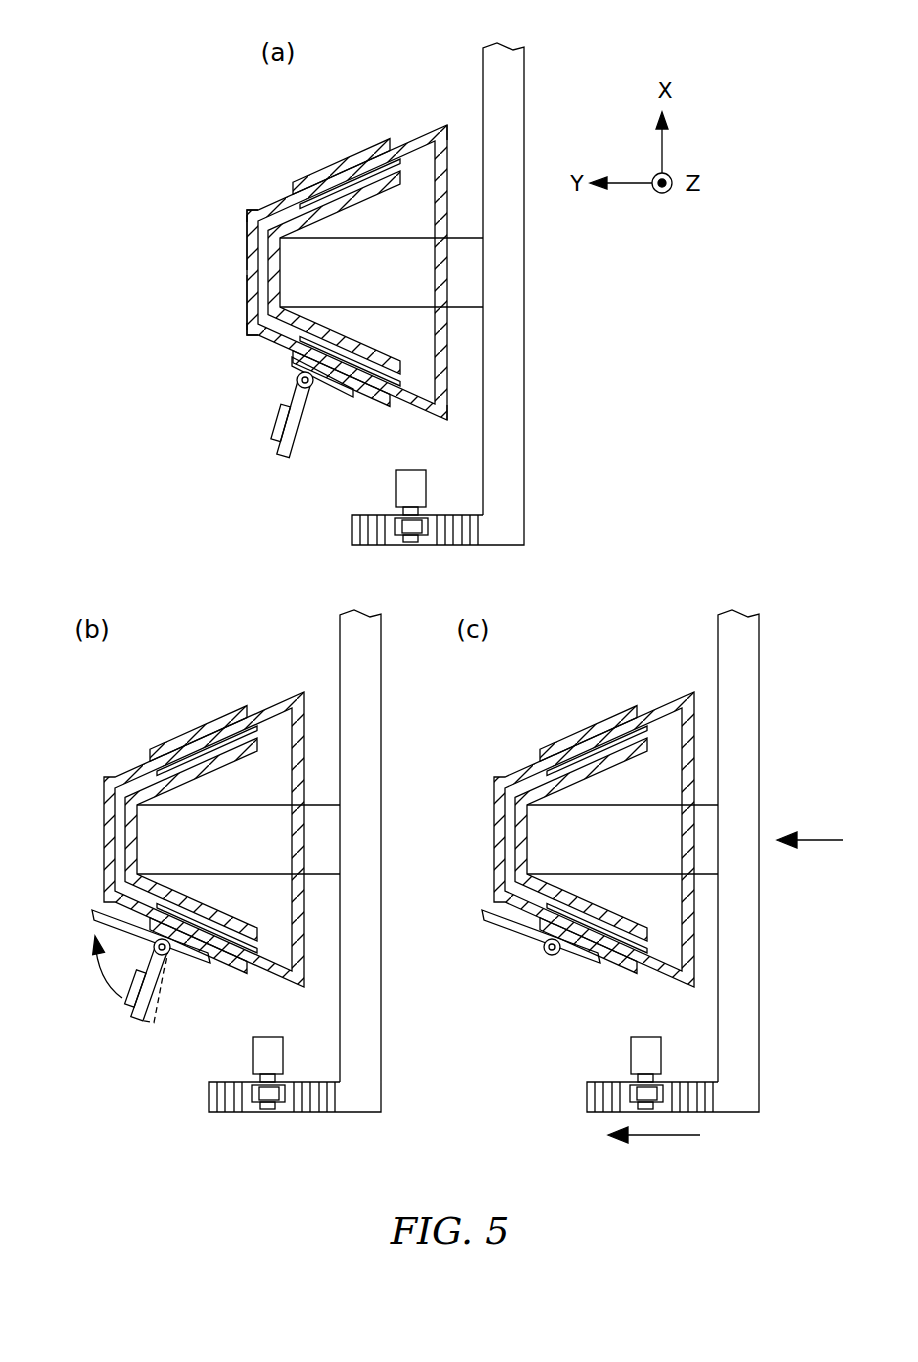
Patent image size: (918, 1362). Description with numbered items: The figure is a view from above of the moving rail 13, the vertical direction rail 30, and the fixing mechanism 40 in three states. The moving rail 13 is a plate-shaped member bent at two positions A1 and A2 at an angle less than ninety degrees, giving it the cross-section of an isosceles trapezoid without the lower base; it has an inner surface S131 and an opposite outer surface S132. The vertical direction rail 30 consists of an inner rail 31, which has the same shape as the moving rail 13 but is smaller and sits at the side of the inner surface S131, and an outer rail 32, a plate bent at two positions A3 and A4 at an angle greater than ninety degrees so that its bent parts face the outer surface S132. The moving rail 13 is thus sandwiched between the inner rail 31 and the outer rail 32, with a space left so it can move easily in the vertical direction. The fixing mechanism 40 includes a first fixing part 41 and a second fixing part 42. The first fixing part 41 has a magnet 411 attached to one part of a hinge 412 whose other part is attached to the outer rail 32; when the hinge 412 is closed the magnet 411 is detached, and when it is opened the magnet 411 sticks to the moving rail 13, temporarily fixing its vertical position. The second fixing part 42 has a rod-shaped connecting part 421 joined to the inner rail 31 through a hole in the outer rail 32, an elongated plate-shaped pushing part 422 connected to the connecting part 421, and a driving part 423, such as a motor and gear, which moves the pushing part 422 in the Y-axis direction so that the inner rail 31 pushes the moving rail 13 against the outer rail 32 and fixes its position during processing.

The moving rail 13 is at (268, 206).
The inner surface S131 is at (258, 309).
The outer surface S132 is at (246, 247).
The bent position A1 is at (246, 210).
The bent position A2 is at (246, 334).
The bent position A3 is at (447, 121).
The bent position A4 is at (447, 430).
The vertical direction rail 30 is at (412, 100).
The inner rail 31 is at (394, 166).
The outer rail 32 is at (346, 176).
The fixing mechanism 40 is at (640, 347).
The first fixing part 41 is at (360, 690).
The magnet 411 is at (290, 458).
The hinge 412 is at (300, 412).
The second fixing part 42 is at (597, 243).
The connecting part 421 is at (467, 268).
The pushing part 422 is at (505, 348).
The driving part 423 is at (430, 492).